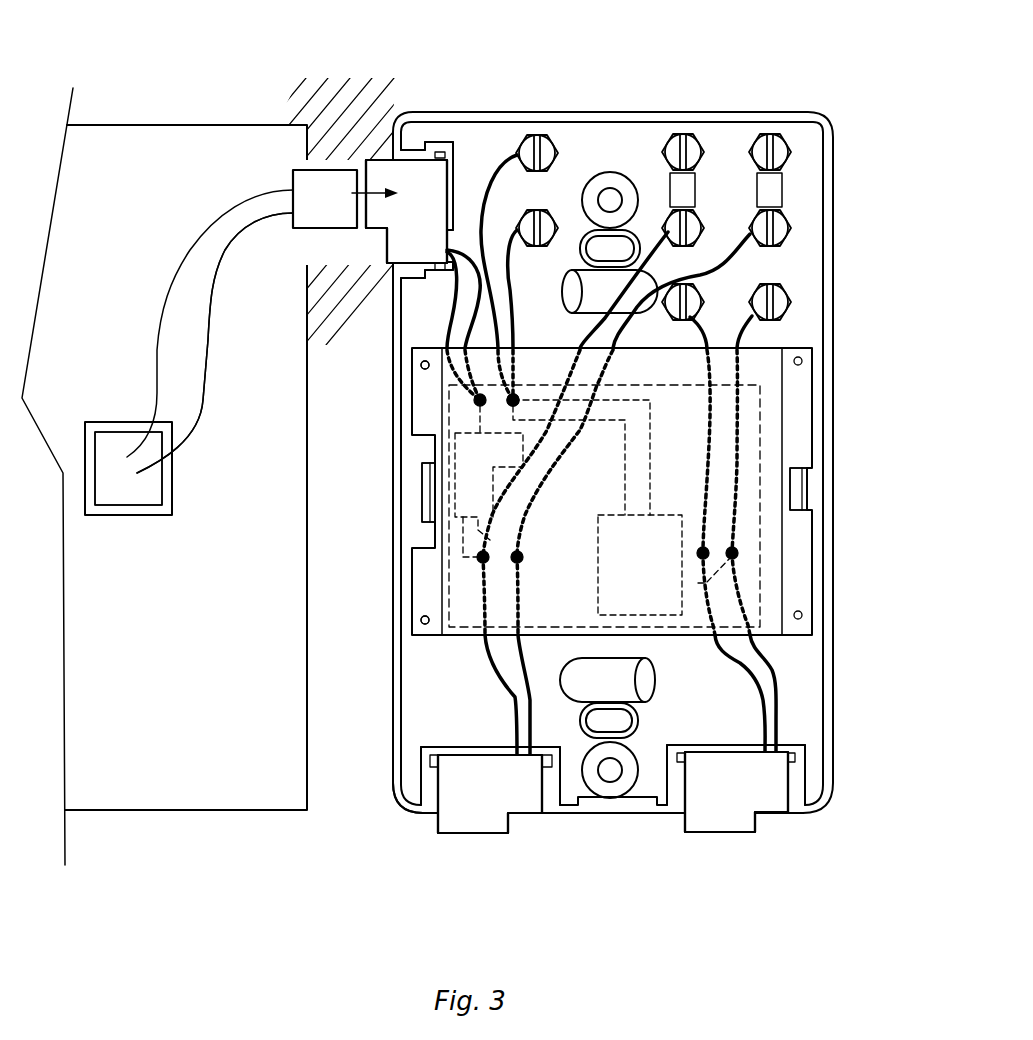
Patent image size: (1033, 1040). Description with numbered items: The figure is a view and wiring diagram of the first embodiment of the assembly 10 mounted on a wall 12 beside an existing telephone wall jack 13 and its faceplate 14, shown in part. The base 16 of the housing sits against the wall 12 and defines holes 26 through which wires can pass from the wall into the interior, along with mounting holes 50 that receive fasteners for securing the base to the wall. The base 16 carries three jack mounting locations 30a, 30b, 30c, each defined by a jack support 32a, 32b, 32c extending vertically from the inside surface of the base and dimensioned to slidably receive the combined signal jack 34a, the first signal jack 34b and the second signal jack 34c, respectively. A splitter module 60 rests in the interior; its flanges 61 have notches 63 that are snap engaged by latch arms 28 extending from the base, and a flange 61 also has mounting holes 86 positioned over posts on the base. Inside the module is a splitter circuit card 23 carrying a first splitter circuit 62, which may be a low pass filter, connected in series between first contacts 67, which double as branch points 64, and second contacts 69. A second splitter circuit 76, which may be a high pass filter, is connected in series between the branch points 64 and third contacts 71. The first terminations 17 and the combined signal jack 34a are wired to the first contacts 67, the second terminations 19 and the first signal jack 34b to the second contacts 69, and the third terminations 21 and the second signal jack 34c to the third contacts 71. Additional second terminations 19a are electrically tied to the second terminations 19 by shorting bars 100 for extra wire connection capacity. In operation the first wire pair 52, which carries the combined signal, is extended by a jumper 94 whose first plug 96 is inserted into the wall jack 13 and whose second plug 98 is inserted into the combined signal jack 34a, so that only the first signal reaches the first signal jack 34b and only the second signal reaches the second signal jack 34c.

The assembly 10 is at (375, 642).
The wall 12 is at (293, 98).
The telephone wall jack 13 is at (163, 513).
The faceplate 14 is at (163, 787).
The base 16 is at (817, 673).
The first terminations 17 is at (560, 220).
The second terminations 19 is at (757, 208).
The additional second terminations 19a is at (757, 133).
The third terminations 21 is at (753, 293).
The splitter circuit card 23 is at (763, 430).
The holes 26 is at (587, 307).
The latch arms 28 is at (423, 508).
The jack mounting location 30a is at (440, 150).
The jack mounting location 30b is at (442, 757).
The jack mounting location 30c is at (803, 747).
The jack support 32a is at (455, 170).
The jack support 32b is at (480, 748).
The jack support 32c is at (712, 745).
The combined signal jack 34a is at (378, 165).
The first signal jack 34b is at (450, 828).
The second signal jack 34c is at (743, 823).
The mounting holes 50 is at (613, 245).
The first wire pair 52 is at (215, 343).
The splitter module 60 is at (438, 487).
The flanges 61 is at (427, 593).
The first splitter circuit 62 is at (475, 470).
The notches 63 is at (813, 502).
The branch points 64 is at (513, 400).
The first contacts 67 is at (513, 400).
The second contacts 69 is at (517, 557).
The third contacts 71 is at (732, 553).
The second splitter circuit 76 is at (623, 563).
The mounting holes 86 is at (425, 360).
The jumper 94 is at (172, 277).
The first plug 96 is at (108, 458).
The second plug 98 is at (330, 193).
The shorting bars 100 is at (670, 183).